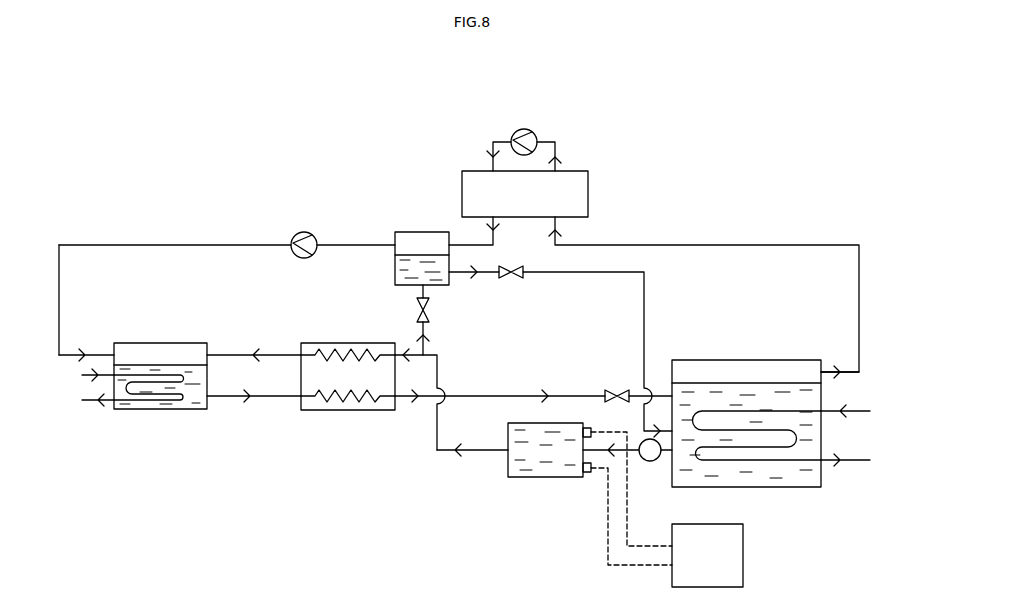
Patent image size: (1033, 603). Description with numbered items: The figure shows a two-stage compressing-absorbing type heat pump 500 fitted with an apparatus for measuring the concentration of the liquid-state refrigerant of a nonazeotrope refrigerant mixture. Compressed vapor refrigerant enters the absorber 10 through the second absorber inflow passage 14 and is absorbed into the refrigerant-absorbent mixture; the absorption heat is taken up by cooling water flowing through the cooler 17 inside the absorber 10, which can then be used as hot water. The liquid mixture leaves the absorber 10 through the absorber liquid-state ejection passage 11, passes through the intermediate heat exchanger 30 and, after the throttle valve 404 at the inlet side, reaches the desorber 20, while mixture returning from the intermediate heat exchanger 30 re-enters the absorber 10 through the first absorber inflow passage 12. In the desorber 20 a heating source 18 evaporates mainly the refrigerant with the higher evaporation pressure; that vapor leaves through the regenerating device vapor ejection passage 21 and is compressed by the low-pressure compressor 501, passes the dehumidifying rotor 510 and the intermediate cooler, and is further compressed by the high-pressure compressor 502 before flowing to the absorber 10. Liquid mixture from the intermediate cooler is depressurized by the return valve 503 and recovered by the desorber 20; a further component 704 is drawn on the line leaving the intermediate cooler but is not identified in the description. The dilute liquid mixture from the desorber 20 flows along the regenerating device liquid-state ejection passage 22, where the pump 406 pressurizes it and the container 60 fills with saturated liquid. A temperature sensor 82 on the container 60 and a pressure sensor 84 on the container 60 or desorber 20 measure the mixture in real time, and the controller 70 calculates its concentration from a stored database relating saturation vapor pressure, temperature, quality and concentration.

The 2-stage compressing-absorbing type heat pump 500 is at (696, 92).
The absorber 10 is at (187, 343).
The absorber liquid-state ejection passage 11 is at (235, 400).
The first absorber inflow passage 12 is at (237, 352).
The second absorber inflow passage 14 is at (73, 352).
The cooler 17 is at (130, 402).
The heating source 18 is at (858, 462).
The desorber 20 is at (800, 358).
The regenerating device vapor ejection passage 21 is at (862, 358).
The regenerating device liquid-state ejection passage 22 is at (460, 456).
The intermediate heat exchanger 30 is at (380, 342).
The container 60 is at (522, 478).
The controller 70 is at (745, 553).
The temperature sensor 82 is at (590, 426).
The pressure sensor 84 is at (587, 474).
The throttle valve 404 is at (620, 388).
The pump 406 is at (643, 442).
The low-pressure compressor 501 is at (533, 133).
The high-pressure compressor 502 is at (314, 237).
The return valve 503 is at (507, 278).
The dehumidifying rotor 510 is at (590, 190).
The expansion valve 704 is at (430, 302).